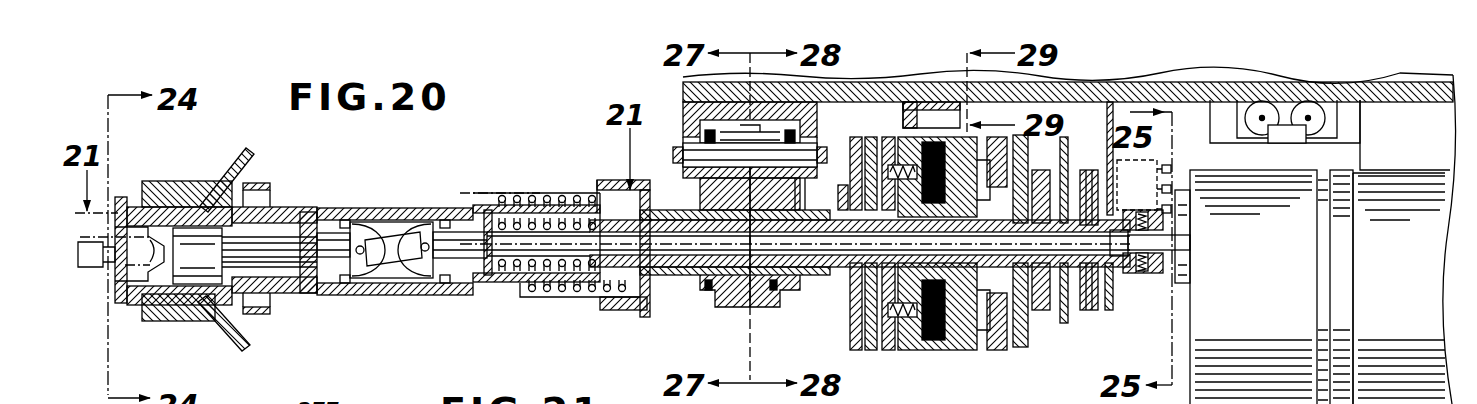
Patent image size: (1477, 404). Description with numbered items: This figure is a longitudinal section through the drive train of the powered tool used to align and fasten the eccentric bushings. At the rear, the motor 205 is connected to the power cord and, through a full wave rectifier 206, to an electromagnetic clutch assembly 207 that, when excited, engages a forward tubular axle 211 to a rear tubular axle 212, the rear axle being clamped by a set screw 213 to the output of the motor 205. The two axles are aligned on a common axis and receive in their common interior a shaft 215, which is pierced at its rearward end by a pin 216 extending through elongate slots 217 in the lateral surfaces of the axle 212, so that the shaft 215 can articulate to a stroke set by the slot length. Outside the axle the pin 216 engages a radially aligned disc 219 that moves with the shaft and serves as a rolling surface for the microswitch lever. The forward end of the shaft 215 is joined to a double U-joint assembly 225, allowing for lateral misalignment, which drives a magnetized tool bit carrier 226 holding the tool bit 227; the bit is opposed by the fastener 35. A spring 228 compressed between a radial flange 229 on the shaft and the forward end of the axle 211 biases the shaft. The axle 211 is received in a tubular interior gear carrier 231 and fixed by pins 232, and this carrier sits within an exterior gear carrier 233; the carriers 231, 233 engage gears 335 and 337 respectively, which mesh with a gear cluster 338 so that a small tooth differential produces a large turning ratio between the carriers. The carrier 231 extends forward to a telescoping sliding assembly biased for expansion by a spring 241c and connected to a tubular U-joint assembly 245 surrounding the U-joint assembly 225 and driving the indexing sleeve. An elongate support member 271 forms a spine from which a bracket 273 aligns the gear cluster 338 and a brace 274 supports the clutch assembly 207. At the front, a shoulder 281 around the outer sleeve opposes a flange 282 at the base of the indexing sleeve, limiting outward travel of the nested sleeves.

The fastener 35 is at (133, 232).
The motor 205 is at (1290, 178).
The full wave rectifier 206 is at (1263, 108).
The electromagnetic clutch assembly 207 is at (995, 345).
The forward tubular axle 211 is at (798, 282).
The rear tubular axle 212 is at (1120, 270).
The set screw 213 is at (1145, 275).
The shaft 215 is at (640, 262).
The pin 216 is at (1093, 190).
The elongate slots 217 is at (1071, 223).
The disc 219 is at (1096, 265).
The double U-joint assembly 225 is at (393, 218).
The magnetized tool bit carrier 226 is at (187, 230).
The tool bit 227 is at (167, 268).
The spring 228 is at (515, 275).
The radial flange 229 is at (488, 225).
The interior gear carrier 231 is at (826, 217).
The pins 232 is at (789, 298).
The exterior gear carrier 233 is at (670, 217).
The spring 241c is at (545, 300).
The tubular U-joint assembly 245 is at (410, 300).
The elongate support member 271 is at (905, 92).
The bracket 273 is at (683, 113).
The brace 274 is at (943, 100).
The shoulder 281 is at (262, 149).
The flange 282 is at (245, 207).
The gear 335 is at (752, 320).
The gear 337 is at (738, 304).
The gear cluster 338 is at (772, 134).